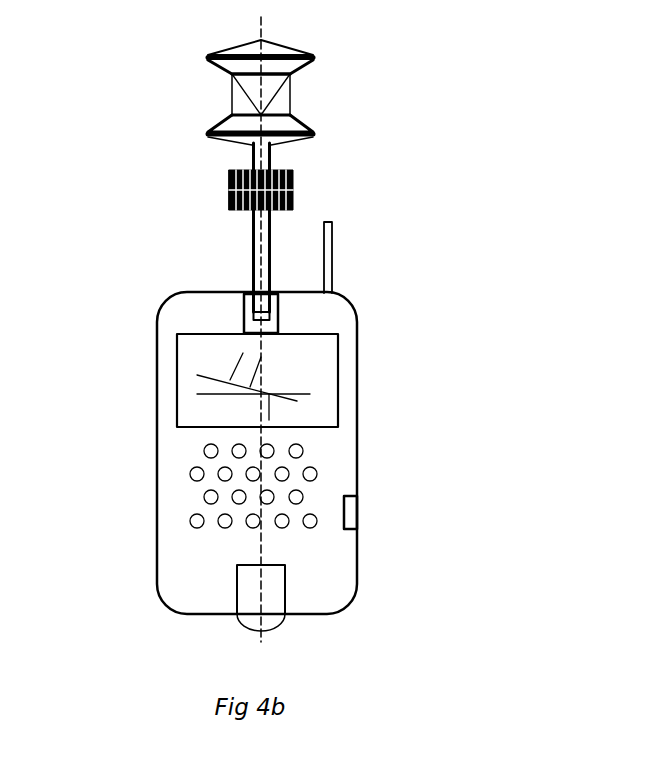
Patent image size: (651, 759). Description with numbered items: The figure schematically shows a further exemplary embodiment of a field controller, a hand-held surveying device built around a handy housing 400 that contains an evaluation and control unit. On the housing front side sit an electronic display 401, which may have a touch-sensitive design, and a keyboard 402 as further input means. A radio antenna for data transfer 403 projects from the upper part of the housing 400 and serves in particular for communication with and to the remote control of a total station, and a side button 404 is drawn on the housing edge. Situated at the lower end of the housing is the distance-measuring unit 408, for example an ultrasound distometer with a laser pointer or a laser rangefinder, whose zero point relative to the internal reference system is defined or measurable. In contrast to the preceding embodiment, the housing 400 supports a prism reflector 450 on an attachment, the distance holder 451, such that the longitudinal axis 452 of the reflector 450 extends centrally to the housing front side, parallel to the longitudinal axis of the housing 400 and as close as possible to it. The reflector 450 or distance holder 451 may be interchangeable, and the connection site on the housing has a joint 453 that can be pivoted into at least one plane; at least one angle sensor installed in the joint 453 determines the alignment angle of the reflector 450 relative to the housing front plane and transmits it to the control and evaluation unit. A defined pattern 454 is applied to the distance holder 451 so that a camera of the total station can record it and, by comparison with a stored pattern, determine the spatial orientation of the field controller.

The housing 400 is at (338, 452).
The electronic display 401 is at (332, 361).
The keyboard 402 is at (197, 465).
The radio antenna for data transfer 403 is at (333, 228).
The side button 404 is at (357, 510).
The distance-measuring unit 408 is at (273, 596).
The prism reflector 450 is at (292, 90).
The distance holder 451 is at (248, 218).
The longitudinal axis 452 is at (260, 32).
The joint 453 is at (250, 307).
The pattern 454 is at (293, 173).